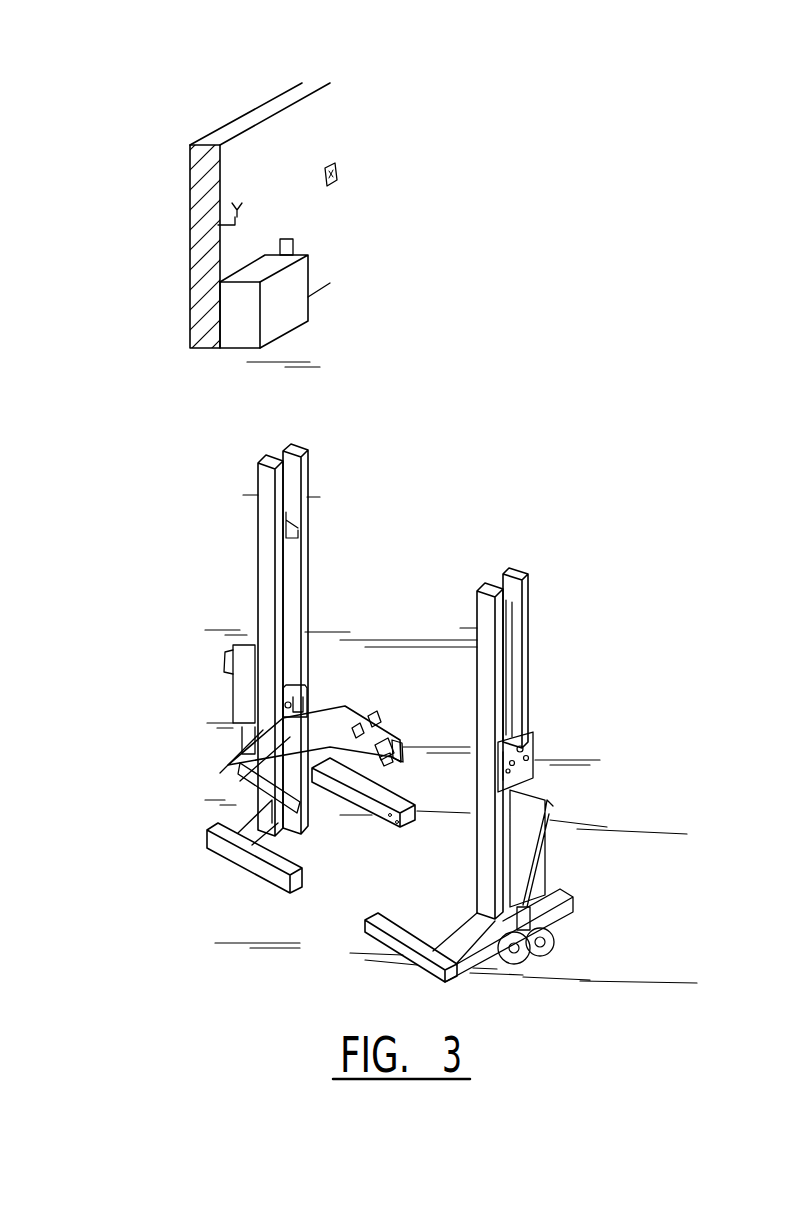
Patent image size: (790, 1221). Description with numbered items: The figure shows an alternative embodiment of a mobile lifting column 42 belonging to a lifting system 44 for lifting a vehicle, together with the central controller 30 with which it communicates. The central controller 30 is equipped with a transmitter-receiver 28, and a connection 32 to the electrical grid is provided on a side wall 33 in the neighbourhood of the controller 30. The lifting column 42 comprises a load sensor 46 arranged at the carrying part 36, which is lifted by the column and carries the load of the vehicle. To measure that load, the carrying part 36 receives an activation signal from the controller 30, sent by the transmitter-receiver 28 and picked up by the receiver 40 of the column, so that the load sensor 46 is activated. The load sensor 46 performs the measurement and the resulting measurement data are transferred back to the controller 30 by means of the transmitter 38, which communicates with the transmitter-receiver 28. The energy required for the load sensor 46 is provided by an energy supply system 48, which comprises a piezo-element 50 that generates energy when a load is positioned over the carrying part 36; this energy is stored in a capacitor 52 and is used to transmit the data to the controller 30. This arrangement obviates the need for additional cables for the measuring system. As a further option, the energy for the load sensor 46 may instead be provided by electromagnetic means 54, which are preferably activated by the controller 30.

The transmitter-receiver 28 is at (240, 212).
The central controller 30 is at (237, 336).
The connection to the electrical grid 32 is at (337, 165).
The side wall 33 is at (222, 136).
The carrying part 36 is at (392, 762).
The transmitter 38 is at (358, 670).
The receiver 40 is at (348, 746).
The lifting column 42 is at (316, 602).
The lifting system 44 is at (152, 600).
The load sensor 46 is at (393, 724).
The energy supply system 48 is at (332, 632).
The piezo-element 50 is at (386, 757).
The capacitor 52 is at (372, 723).
The electromagnetic means 54 is at (286, 238).